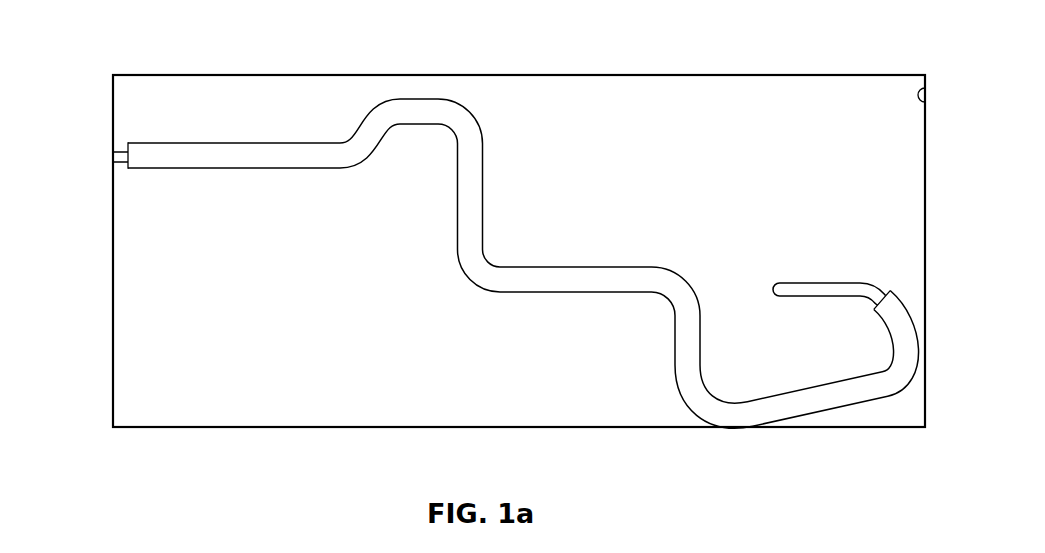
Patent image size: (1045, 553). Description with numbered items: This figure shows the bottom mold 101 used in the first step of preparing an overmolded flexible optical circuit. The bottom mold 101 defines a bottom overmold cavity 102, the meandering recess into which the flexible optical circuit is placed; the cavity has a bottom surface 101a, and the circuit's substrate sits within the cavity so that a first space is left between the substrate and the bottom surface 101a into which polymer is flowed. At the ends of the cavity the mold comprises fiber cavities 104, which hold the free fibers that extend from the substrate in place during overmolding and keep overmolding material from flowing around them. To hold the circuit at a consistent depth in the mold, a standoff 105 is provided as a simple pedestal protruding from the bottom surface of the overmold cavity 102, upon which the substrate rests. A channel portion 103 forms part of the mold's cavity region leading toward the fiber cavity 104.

The bottom mold 101 is at (545, 100).
The bottom surface 101a is at (440, 122).
The bottom overmold cavity 102 is at (353, 130).
The straight feed section of antenna trace 103 is at (170, 152).
The fiber cavities 104 is at (122, 147).
The standoff 105 is at (688, 350).